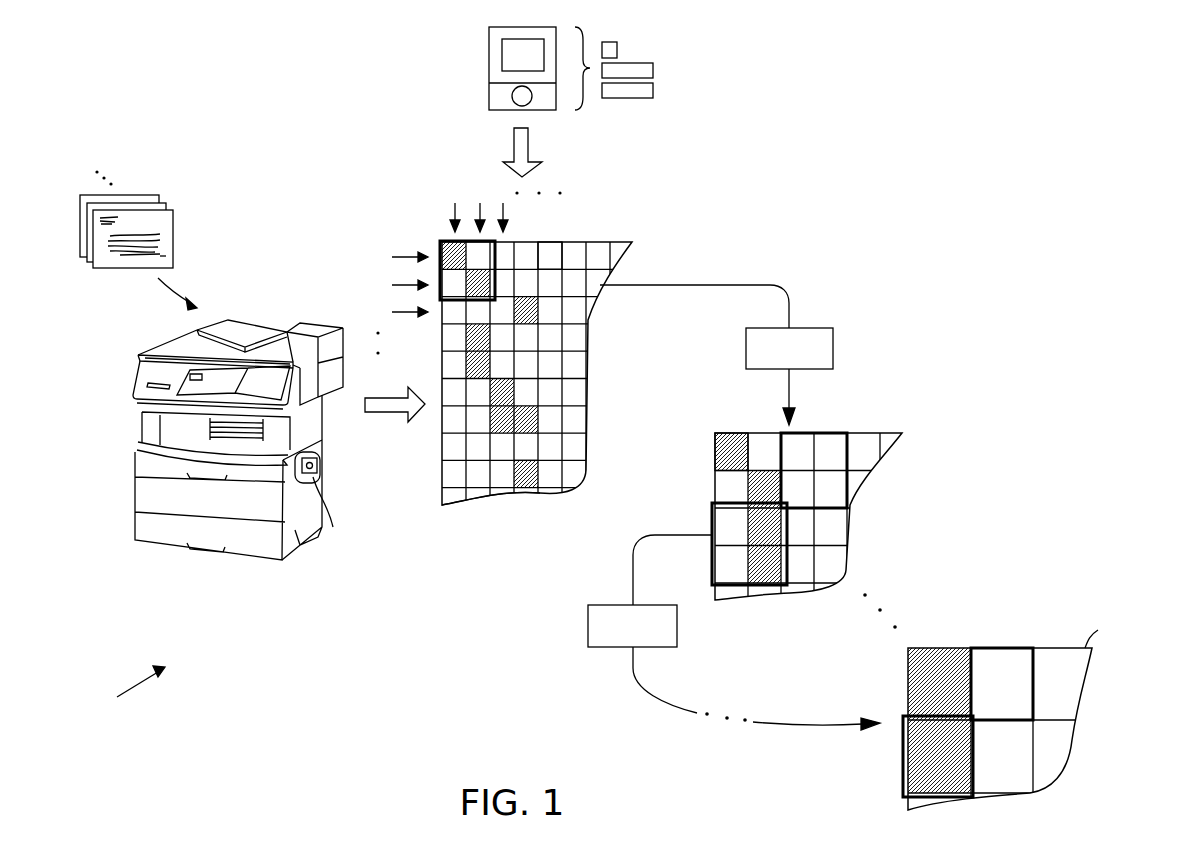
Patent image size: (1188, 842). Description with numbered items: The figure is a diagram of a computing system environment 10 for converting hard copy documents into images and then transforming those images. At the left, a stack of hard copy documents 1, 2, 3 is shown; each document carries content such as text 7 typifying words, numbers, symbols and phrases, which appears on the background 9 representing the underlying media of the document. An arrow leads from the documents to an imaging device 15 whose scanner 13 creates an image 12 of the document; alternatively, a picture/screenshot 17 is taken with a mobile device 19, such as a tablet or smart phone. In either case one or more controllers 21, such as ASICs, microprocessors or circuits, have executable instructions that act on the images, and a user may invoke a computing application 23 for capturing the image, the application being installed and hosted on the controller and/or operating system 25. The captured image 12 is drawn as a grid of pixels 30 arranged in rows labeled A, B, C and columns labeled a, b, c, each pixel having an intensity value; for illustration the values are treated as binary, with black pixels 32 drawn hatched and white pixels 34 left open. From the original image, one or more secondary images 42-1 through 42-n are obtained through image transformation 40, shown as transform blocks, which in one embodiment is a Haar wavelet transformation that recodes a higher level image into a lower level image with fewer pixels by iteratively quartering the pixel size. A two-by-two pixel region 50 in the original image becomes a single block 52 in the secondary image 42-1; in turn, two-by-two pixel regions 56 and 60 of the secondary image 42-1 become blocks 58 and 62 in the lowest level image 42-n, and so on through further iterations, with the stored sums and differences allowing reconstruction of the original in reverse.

The document 1 is at (108, 270).
The document 2 is at (89, 262).
The document 3 is at (82, 257).
The text 7 is at (145, 218).
The background 9 is at (165, 257).
The computing system environment 10 is at (130, 691).
The image 12 is at (613, 262).
The scanner 13 is at (195, 345).
The imaging device 15 is at (135, 478).
The picture/screenshot 17 is at (523, 55).
The mobile device 19 is at (489, 33).
The controller 21 is at (678, 90).
The computing application 23 is at (178, 378).
The operating system 25 is at (653, 70).
The pixels 30 is at (550, 252).
The black pixels 32 is at (537, 478).
The white pixels 34 is at (478, 493).
The image transformation 40 is at (833, 350).
The secondary image 42-1 is at (880, 457).
The secondary image 42-n is at (1078, 690).
The 2×2 pixel region 50 is at (440, 240).
The block 52 is at (715, 450).
The 2×2 pixel region 56 is at (847, 432).
The block 58 is at (1002, 648).
The 2×2 pixel region 60 is at (712, 515).
The block 62 is at (903, 755).